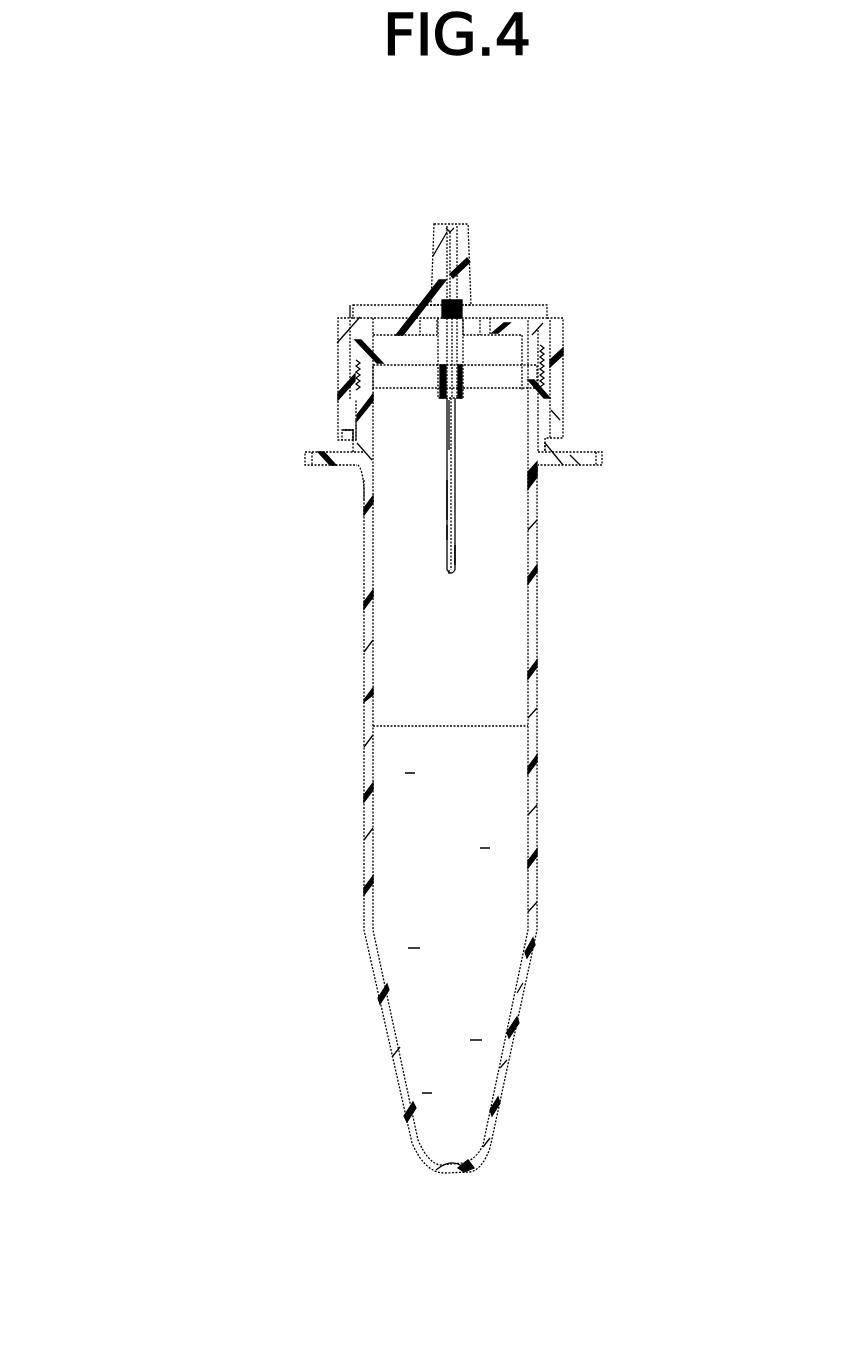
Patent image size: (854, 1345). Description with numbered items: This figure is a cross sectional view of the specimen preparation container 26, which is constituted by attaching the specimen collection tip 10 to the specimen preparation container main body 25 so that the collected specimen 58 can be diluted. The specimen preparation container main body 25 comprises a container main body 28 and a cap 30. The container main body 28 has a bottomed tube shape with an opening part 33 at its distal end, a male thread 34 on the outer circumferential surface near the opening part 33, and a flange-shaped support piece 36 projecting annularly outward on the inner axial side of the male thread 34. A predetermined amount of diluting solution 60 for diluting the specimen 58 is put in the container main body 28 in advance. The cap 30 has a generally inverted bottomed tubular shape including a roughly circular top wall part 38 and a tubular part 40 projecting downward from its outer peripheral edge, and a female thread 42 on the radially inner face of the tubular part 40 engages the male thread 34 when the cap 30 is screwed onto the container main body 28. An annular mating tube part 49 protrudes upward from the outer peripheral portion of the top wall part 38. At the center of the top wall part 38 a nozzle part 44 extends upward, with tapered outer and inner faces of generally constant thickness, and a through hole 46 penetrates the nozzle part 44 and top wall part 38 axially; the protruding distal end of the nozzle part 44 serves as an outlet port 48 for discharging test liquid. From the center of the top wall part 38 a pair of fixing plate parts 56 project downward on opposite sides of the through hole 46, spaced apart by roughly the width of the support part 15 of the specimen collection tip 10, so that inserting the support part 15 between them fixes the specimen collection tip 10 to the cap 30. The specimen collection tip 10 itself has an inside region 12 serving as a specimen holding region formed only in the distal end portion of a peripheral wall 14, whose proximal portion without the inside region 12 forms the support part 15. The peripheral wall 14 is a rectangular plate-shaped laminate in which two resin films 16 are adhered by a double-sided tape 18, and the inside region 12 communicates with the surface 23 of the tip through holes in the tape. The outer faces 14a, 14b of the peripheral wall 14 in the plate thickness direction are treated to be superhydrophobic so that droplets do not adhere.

The specimen preparation container 26 is at (588, 233).
The nozzle part 44 is at (490, 256).
The outlet port 48 is at (451, 230).
The through hole 46 is at (457, 282).
The top wall part 38 is at (516, 330).
The opening part 33 is at (380, 383).
The mating tube part 49 is at (356, 321).
The female thread 42 is at (322, 358).
The tubular part 40 is at (340, 406).
The male thread 34 is at (552, 370).
The fixing plate part 56 is at (498, 358).
The support part 15 is at (468, 378).
The peripheral wall 14 is at (484, 509).
The double-sided tape 18 is at (456, 463).
The surface 23 is at (447, 455).
The resin film 16 is at (448, 494).
The outer face 14a is at (447, 531).
The outer face 14b is at (456, 562).
The specimen 58 is at (457, 595).
The specimen collection tip 10 is at (422, 745).
The inside region 12 is at (443, 570).
The specimen preparation container main body 25 is at (422, 456).
The support piece 36 is at (584, 453).
The cap 30 is at (333, 422).
The container main body 28 is at (357, 490).
The diluting solution 60 is at (503, 870).